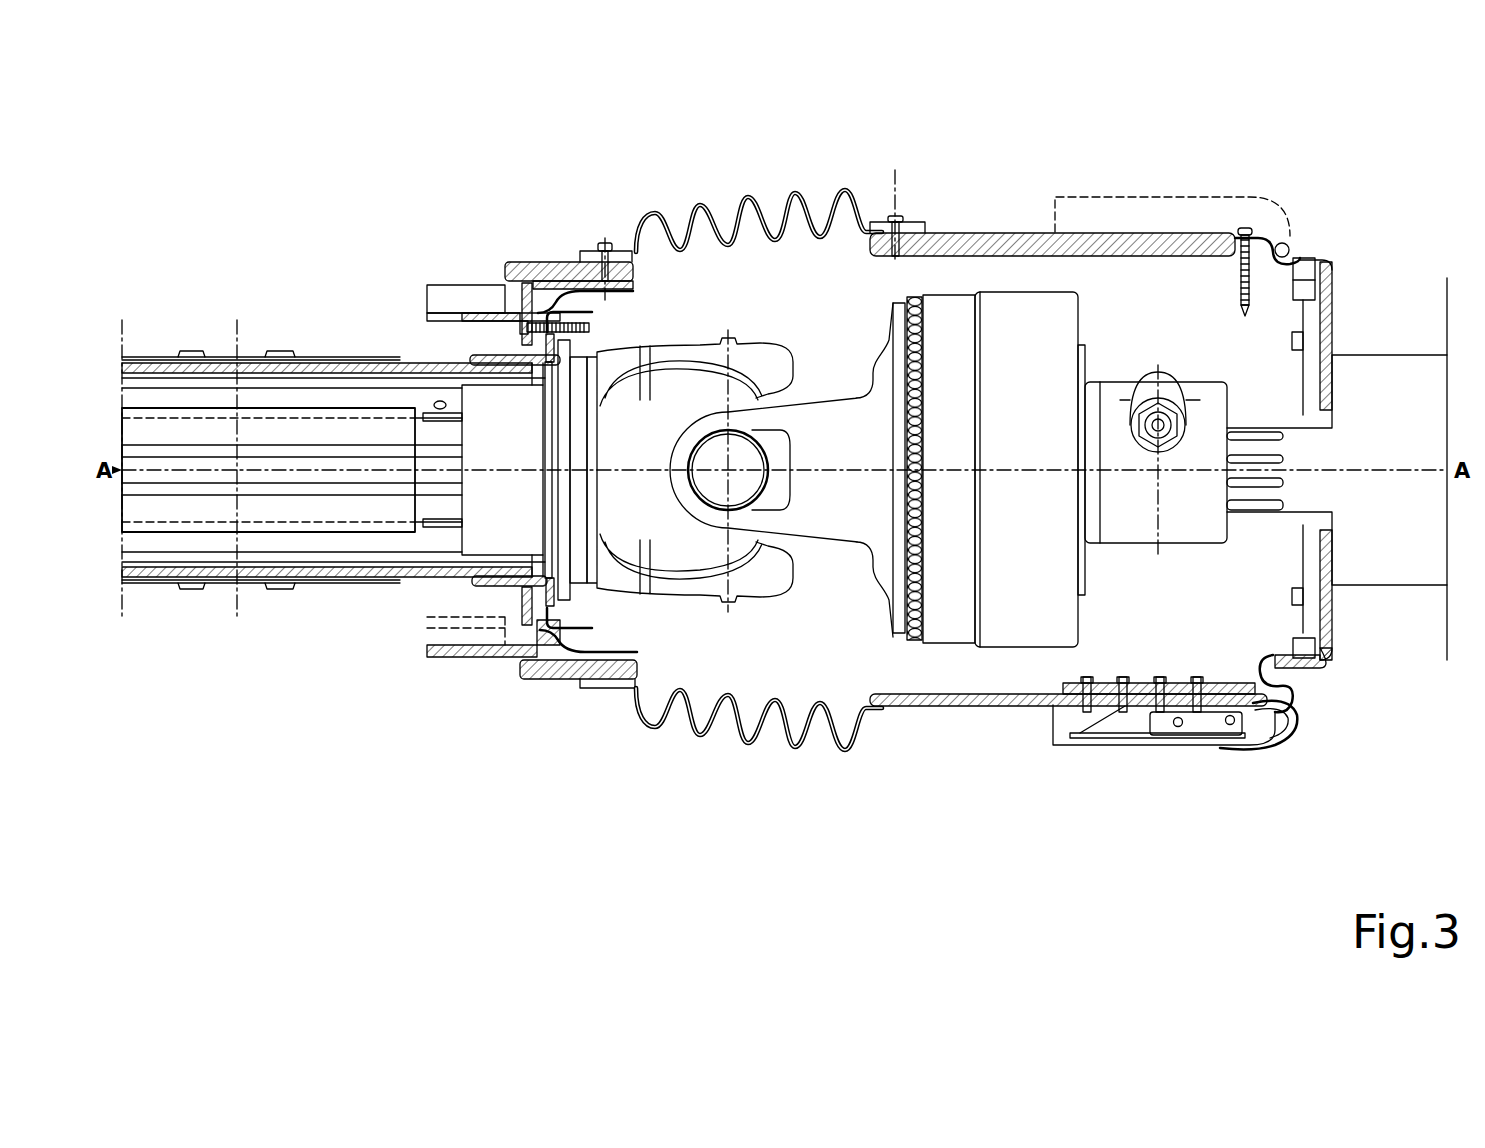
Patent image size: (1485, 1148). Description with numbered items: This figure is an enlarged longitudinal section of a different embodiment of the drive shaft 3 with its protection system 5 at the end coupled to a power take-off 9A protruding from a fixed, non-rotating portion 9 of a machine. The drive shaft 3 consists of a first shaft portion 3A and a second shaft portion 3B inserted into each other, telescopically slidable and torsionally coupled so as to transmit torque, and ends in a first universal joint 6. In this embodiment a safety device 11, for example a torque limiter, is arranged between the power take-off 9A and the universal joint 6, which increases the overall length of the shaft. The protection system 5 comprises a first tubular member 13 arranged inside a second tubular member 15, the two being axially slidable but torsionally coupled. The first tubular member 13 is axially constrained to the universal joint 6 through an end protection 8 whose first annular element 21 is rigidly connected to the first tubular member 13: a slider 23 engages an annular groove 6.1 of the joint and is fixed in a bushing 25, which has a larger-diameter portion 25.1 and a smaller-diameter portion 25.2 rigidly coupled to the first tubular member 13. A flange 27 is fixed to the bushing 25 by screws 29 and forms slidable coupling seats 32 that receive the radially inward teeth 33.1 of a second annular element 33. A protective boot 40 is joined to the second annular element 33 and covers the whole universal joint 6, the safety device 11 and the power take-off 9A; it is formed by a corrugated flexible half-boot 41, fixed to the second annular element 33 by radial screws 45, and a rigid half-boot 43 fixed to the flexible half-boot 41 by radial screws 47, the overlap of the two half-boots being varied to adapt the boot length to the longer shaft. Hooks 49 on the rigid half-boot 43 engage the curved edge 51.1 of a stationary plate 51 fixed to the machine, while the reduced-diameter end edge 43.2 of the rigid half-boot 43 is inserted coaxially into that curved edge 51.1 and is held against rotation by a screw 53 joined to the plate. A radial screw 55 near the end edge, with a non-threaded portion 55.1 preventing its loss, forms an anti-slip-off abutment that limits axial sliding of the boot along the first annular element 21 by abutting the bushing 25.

The drive shaft 3 is at (308, 545).
The first shaft portion 3A is at (430, 508).
The second shaft portion 3B is at (347, 532).
The protection system 5 is at (252, 328).
The first universal joint 6 is at (812, 366).
The annular groove 6.1 is at (567, 437).
The end protection 8 is at (696, 145).
The fixed portion of a machine 9 is at (1399, 350).
The power take-off 9A is at (1265, 432).
The safety device 11 is at (1065, 320).
The first tubular member 13 is at (353, 363).
The second tubular member 15 is at (305, 357).
The first annular element 21 is at (600, 336).
The slider 23 is at (583, 346).
The bushing 25 is at (512, 675).
The first approximately cylindrical portion 25.1 is at (630, 287).
The second approximately cylindrical portion 25.2 is at (472, 357).
The flange 27 is at (468, 272).
The screws 29 is at (523, 337).
The slidable coupling seats 32 is at (445, 306).
The second annular element 33 is at (566, 262).
The teeth 33.1 is at (505, 270).
The protective boot 40 is at (830, 130).
The flexible half-boot 41 is at (797, 193).
The rigid half-boot 43 is at (988, 232).
The end edge 43.2 is at (1285, 665).
The radial screws 45 is at (605, 243).
The radial screws 47 is at (895, 216).
The hooks 49 is at (1270, 745).
The stationary plate 51 is at (1325, 657).
The curved edge 51.1 is at (1285, 236).
The screw 53 is at (1305, 258).
The radial screw 55 is at (1245, 228).
The interrupted thread 55.1 is at (1243, 275).